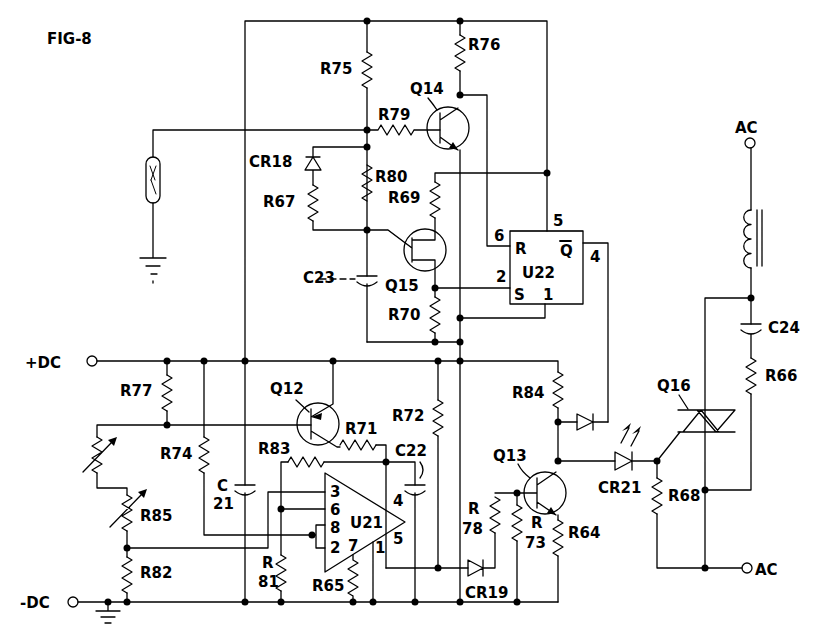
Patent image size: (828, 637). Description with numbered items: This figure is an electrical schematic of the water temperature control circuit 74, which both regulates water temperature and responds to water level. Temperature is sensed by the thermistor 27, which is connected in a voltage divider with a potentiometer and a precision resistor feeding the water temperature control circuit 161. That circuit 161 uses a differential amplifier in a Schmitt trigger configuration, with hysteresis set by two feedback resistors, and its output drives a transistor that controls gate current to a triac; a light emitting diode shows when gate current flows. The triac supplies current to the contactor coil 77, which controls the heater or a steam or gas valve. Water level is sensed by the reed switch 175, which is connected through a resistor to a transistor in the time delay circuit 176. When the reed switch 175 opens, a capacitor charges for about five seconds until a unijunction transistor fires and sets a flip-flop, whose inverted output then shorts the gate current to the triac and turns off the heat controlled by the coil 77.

The water temperature control circuit 74 is at (613, 111).
The contactor coil 77 is at (742, 237).
The reed switch 175 is at (144, 186).
The time delay circuit 176 is at (332, 250).
The thermistor 27 is at (93, 462).
The water temperature control circuit 161 is at (96, 515).